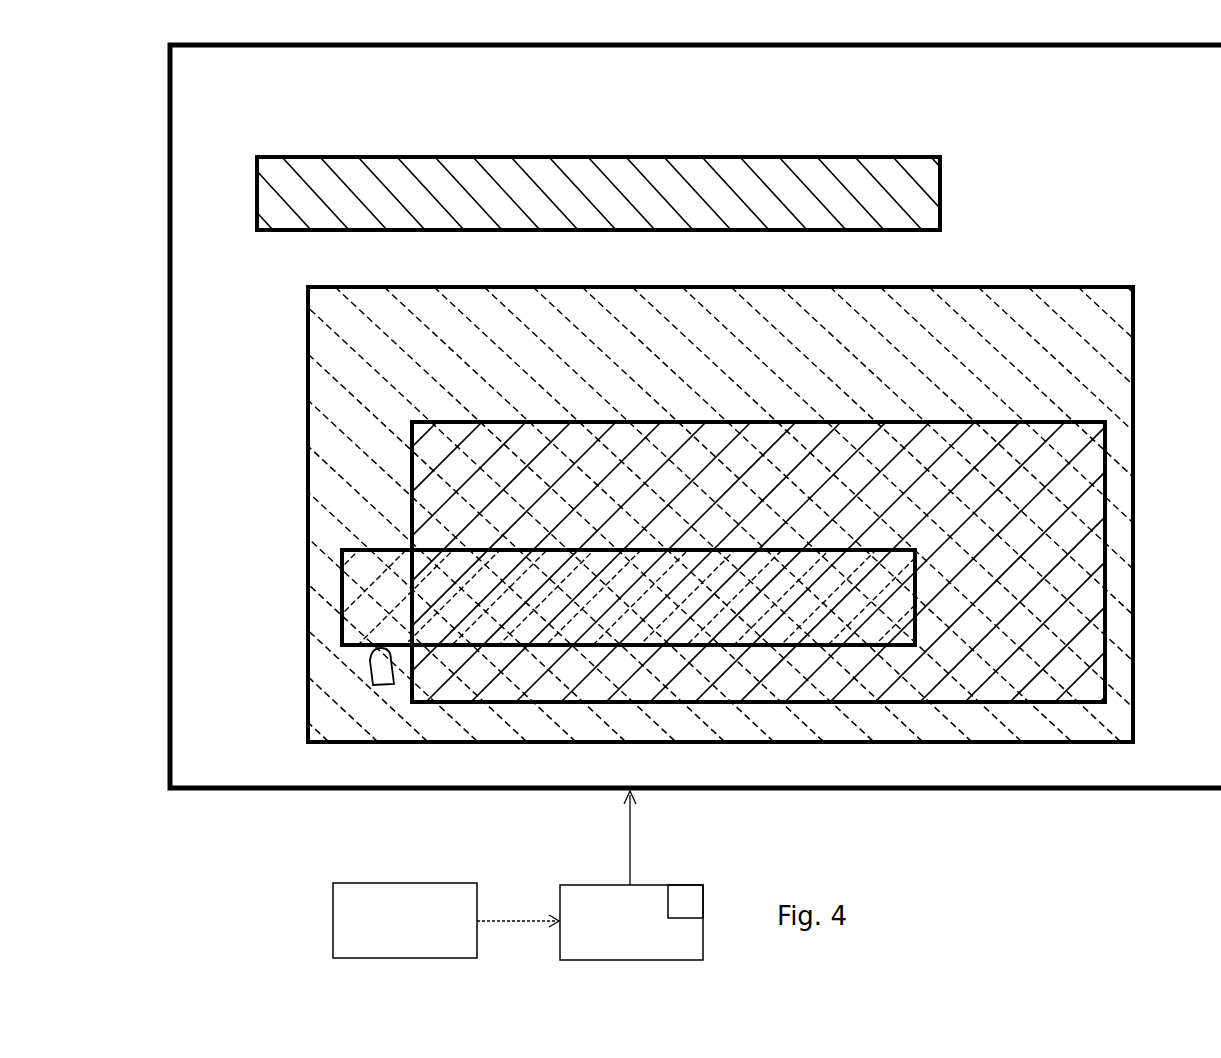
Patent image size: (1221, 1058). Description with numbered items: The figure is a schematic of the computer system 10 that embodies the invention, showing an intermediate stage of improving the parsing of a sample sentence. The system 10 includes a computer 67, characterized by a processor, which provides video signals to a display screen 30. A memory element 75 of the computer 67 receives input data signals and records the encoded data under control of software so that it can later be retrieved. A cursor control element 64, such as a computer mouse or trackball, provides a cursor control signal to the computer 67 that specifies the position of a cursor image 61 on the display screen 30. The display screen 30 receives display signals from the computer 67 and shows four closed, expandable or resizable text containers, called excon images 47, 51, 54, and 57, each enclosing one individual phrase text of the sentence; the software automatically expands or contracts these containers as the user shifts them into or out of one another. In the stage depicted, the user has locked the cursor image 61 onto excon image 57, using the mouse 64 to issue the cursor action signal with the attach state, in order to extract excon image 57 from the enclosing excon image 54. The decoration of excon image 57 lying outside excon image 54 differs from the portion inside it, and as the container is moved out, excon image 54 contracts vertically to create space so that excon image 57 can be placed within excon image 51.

The system 10 is at (288, 849).
The display screen 30 is at (170, 127).
The excon image 47 is at (257, 208).
The excon image 51 is at (308, 343).
The excon image 54 is at (410, 518).
The excon image 57 is at (342, 632).
The cursor image 61 is at (366, 663).
The cursor control element 64 is at (460, 883).
The computer 67 is at (562, 883).
The memory element 75 is at (688, 885).